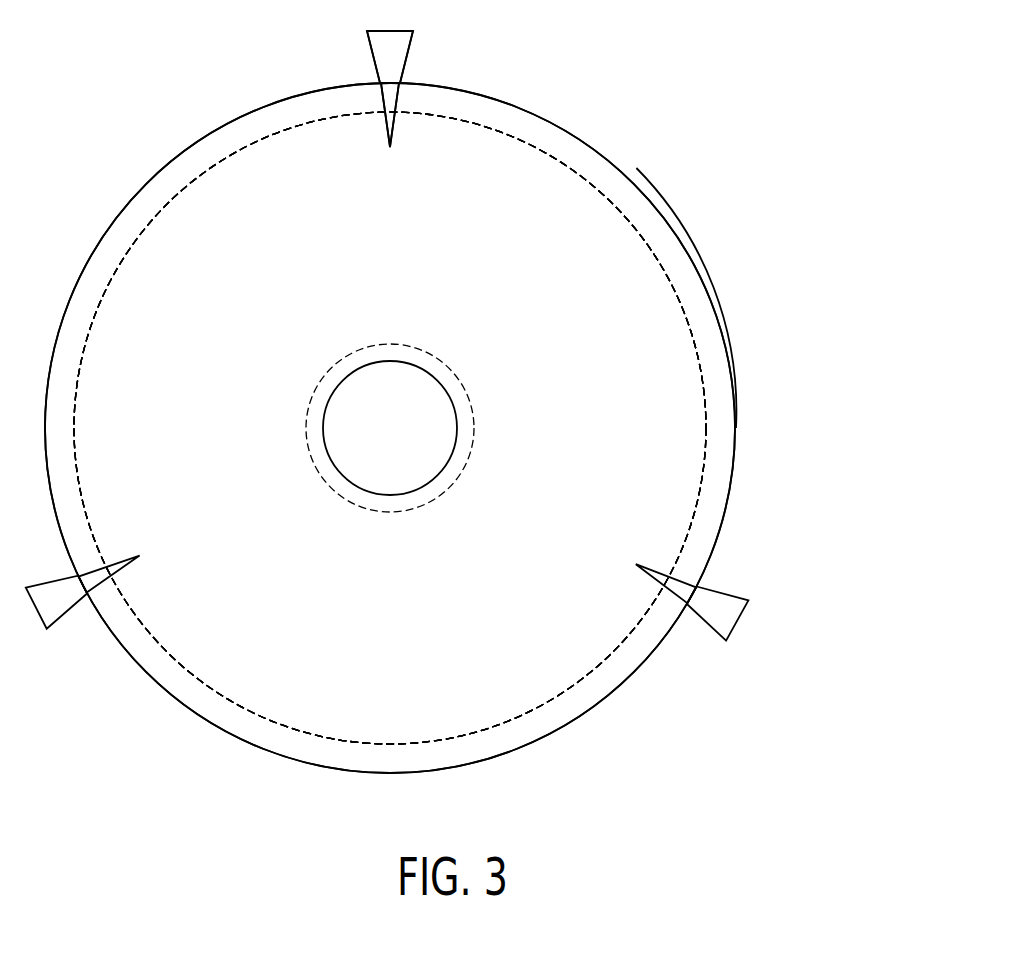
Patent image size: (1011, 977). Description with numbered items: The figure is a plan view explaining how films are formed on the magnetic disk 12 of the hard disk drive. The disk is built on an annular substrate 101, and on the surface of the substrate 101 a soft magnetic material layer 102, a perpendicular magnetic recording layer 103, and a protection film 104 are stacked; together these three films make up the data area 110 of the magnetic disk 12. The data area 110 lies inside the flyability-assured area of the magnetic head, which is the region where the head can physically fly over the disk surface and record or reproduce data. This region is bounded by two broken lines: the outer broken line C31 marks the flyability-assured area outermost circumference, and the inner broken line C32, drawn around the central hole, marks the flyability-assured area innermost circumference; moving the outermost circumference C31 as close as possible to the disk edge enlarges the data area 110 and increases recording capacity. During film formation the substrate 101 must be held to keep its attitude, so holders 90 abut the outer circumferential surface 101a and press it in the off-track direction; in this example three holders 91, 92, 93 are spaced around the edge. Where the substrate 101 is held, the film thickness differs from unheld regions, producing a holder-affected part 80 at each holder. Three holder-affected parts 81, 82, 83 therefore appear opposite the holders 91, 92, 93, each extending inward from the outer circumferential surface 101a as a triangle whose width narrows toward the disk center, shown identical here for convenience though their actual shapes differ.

The magnetic disk 12 is at (595, 91).
The substrate 101 is at (633, 180).
The outer circumferential surface 101a is at (690, 242).
The data area 110 is at (653, 318).
The soft magnetic material layer 102 is at (390, 428).
The perpendicular magnetic recording layer 103 is at (390, 428).
The protection film 104 is at (390, 428).
The flyability-assured area outermost circumference C31 is at (705, 415).
The flyability-assured area innermost circumference C32 is at (441, 492).
The holder-affected part 80 is at (398, 118).
The holder-affected part 81 is at (390, 115).
The holder-affected part 82 is at (652, 573).
The holder-affected part 83 is at (120, 562).
The holder 90 is at (413, 45).
The holder 91 is at (390, 57).
The holder 92 is at (710, 628).
The holder 93 is at (68, 615).